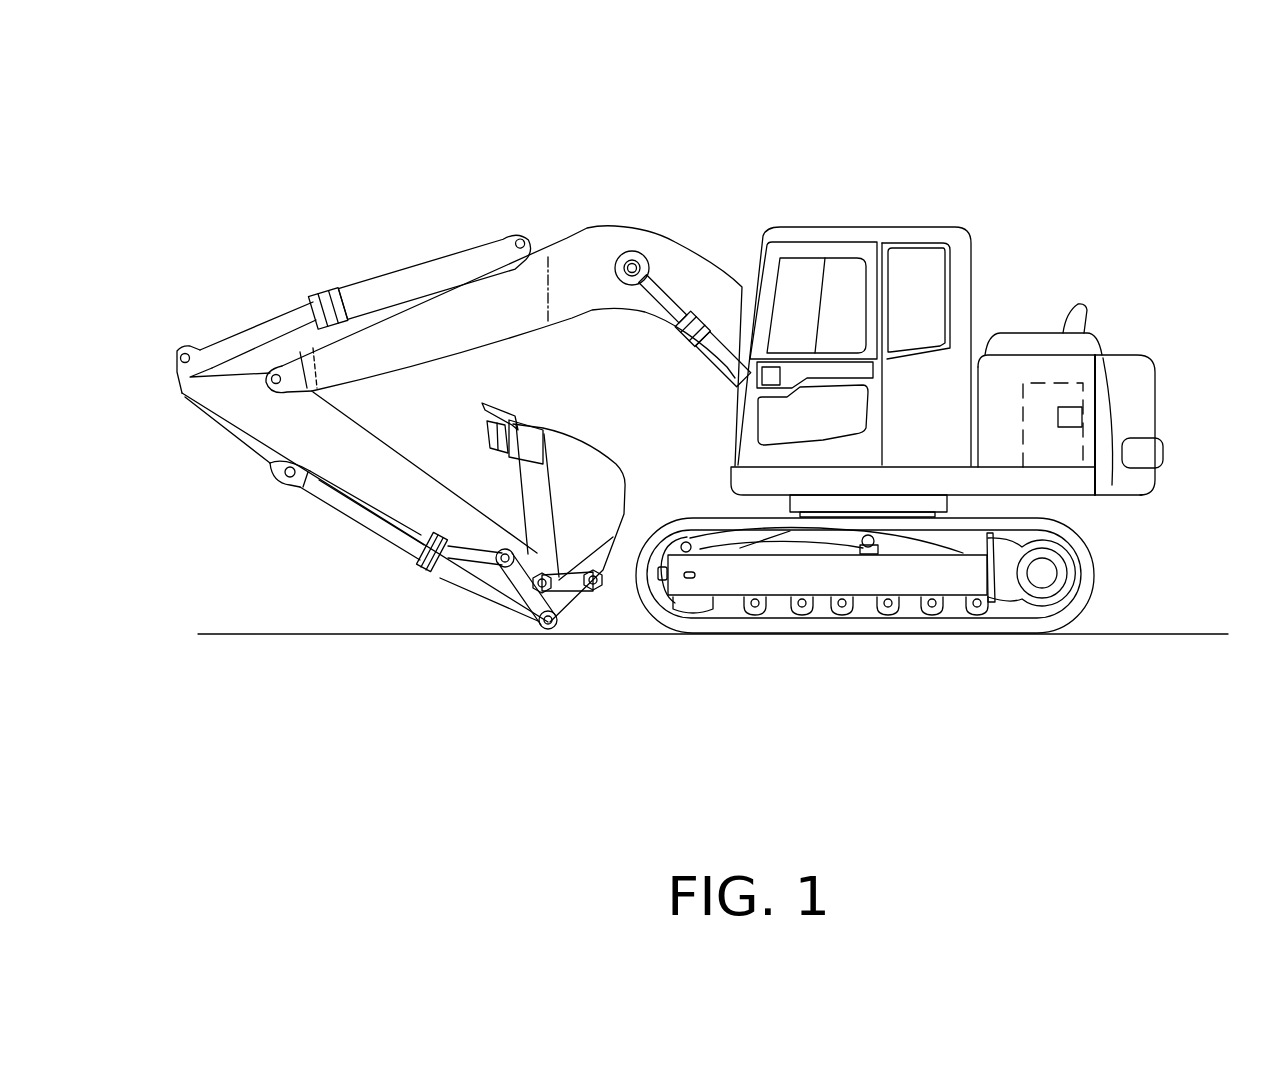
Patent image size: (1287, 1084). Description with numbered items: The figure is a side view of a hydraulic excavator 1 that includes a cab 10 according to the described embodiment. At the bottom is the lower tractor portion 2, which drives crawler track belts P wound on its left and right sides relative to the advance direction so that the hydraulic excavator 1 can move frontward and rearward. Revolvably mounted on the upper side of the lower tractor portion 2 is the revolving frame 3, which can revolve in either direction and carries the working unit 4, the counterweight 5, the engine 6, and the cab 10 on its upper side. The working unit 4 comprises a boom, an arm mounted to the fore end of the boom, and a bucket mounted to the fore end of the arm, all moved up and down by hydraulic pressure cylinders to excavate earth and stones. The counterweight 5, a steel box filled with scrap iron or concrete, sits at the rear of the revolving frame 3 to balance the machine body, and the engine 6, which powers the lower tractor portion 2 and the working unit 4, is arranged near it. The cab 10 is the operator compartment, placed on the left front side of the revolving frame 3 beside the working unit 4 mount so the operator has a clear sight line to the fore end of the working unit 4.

The hydraulic excavator 1 is at (987, 170).
The lower tractor portion 2 is at (670, 646).
The revolving frame 3 is at (740, 481).
The working unit 4 is at (560, 190).
The counterweight 5 is at (1140, 385).
The engine 6 is at (1087, 438).
The cab 10 is at (762, 203).
The crawler track belts P is at (1093, 572).